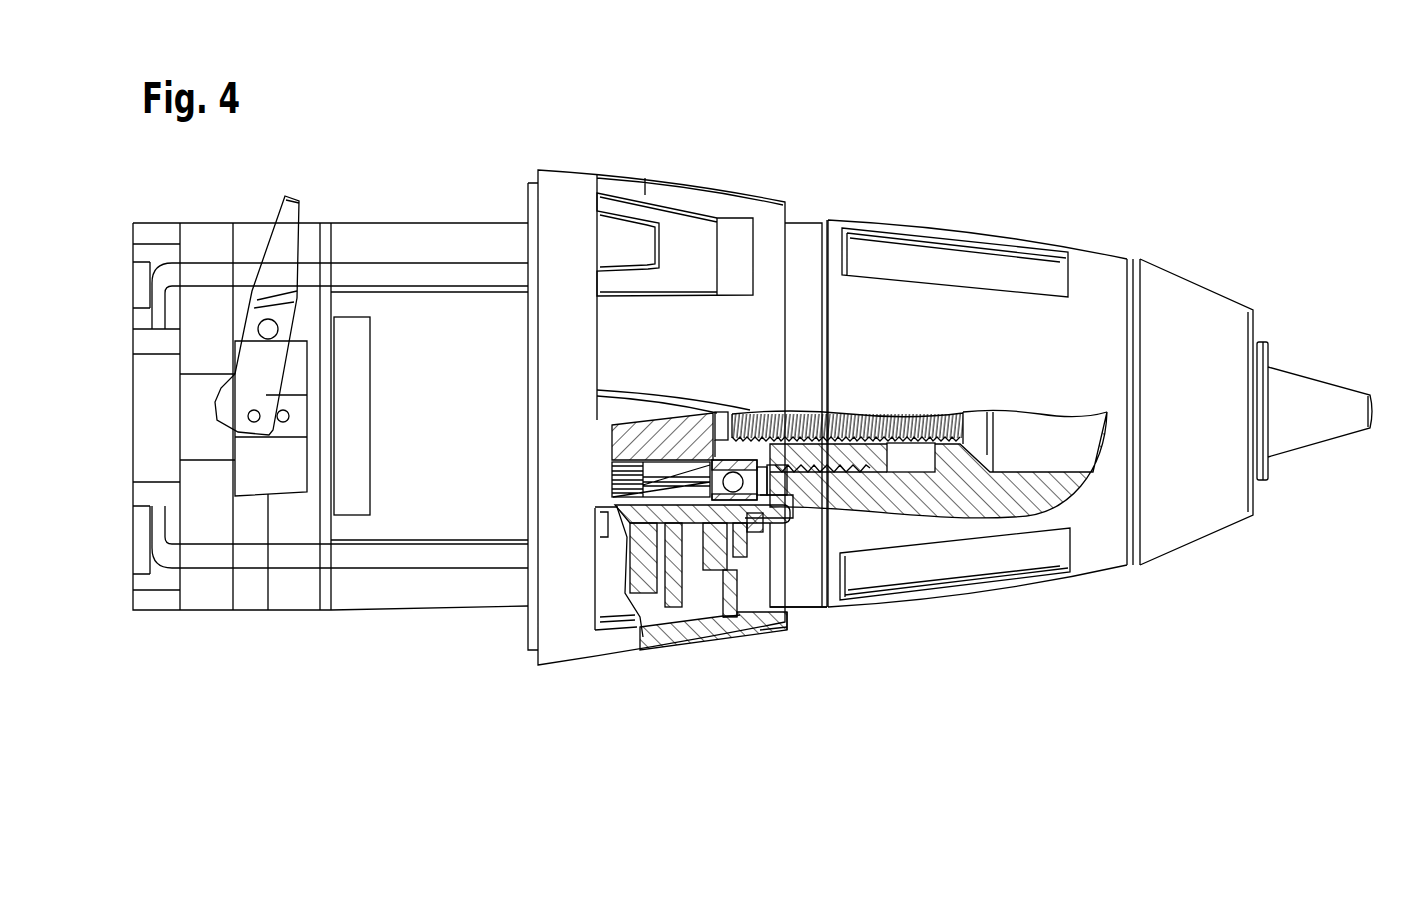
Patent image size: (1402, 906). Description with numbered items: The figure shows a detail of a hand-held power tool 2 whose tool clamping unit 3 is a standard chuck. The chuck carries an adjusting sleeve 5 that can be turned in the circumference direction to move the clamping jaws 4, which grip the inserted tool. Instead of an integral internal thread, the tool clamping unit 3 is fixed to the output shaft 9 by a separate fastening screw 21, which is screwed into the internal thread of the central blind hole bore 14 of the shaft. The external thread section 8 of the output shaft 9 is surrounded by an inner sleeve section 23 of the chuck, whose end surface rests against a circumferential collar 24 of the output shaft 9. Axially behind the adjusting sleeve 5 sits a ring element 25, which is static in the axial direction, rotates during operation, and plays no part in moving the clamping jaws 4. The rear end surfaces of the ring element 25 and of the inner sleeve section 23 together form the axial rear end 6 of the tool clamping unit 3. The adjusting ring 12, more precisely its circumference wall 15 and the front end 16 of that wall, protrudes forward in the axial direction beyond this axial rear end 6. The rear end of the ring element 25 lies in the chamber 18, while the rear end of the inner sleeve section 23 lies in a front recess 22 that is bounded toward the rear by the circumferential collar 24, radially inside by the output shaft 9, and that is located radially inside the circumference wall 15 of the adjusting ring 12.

The hand-held power tool 2 is at (880, 178).
The tool clamping unit 3 is at (1178, 295).
The clamping jaws 4 is at (1315, 390).
The adjusting sleeve 5 is at (1015, 267).
The axial rear end of the tool clamping unit 6 is at (612, 501).
The external thread section 8 is at (847, 427).
The output shaft 9 is at (620, 445).
The adjusting ring 12 is at (657, 640).
The central blind hole bore 14 is at (730, 417).
The circumference wall 15 is at (775, 633).
The front end of the circumference wall 16 is at (787, 620).
The chamber 18 is at (742, 630).
The fastening screw 21 is at (927, 423).
The front recess 22 is at (773, 413).
The inner sleeve section 23 is at (865, 492).
The circumferential collar 24 is at (787, 518).
The ring element 25 is at (807, 240).